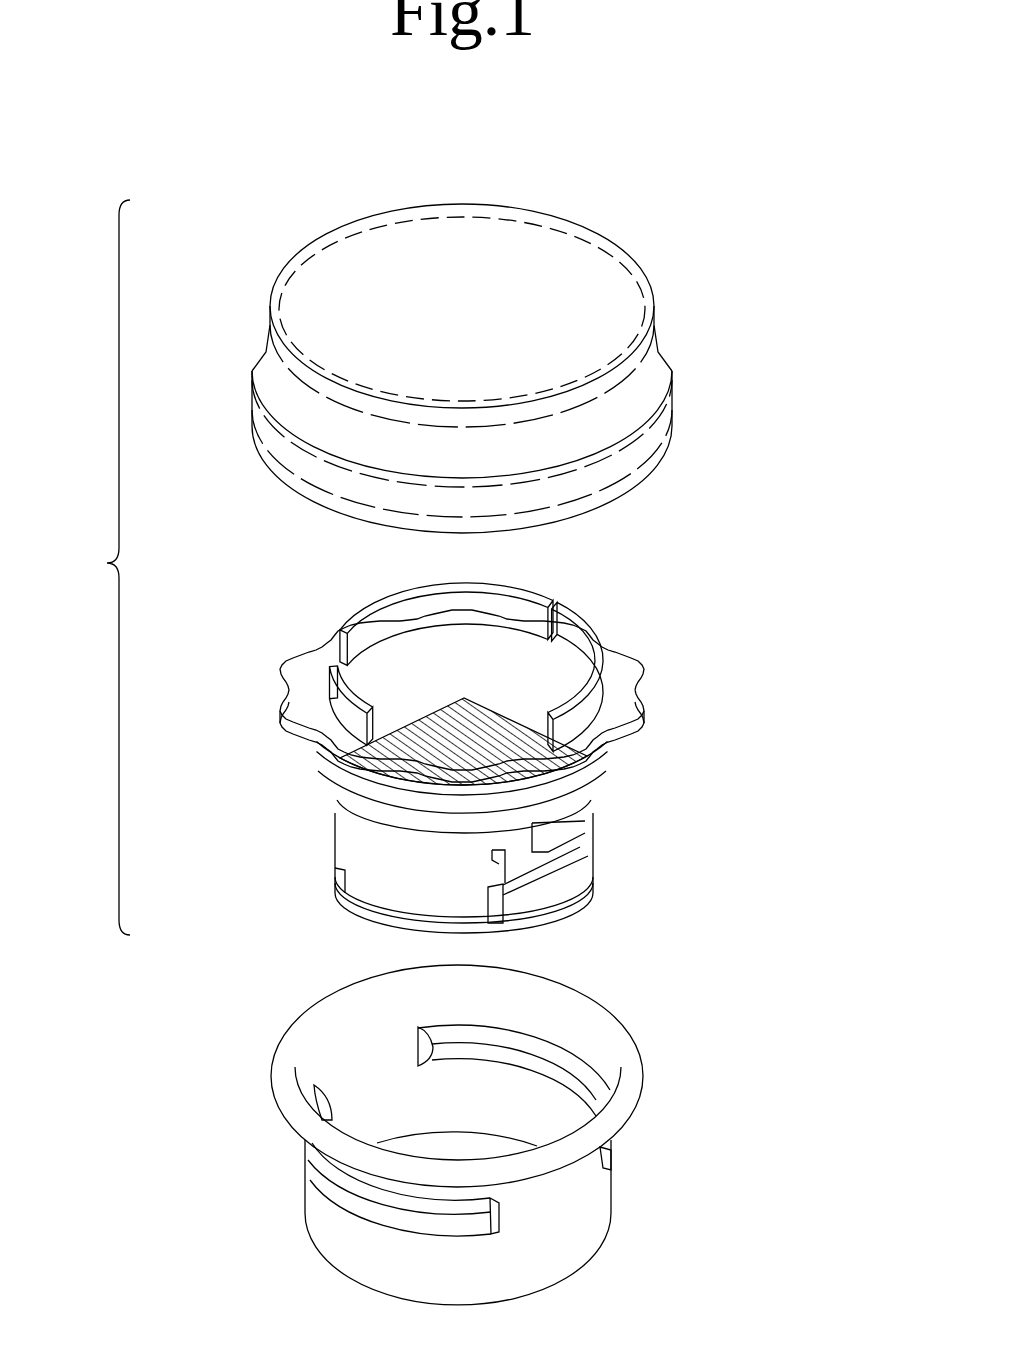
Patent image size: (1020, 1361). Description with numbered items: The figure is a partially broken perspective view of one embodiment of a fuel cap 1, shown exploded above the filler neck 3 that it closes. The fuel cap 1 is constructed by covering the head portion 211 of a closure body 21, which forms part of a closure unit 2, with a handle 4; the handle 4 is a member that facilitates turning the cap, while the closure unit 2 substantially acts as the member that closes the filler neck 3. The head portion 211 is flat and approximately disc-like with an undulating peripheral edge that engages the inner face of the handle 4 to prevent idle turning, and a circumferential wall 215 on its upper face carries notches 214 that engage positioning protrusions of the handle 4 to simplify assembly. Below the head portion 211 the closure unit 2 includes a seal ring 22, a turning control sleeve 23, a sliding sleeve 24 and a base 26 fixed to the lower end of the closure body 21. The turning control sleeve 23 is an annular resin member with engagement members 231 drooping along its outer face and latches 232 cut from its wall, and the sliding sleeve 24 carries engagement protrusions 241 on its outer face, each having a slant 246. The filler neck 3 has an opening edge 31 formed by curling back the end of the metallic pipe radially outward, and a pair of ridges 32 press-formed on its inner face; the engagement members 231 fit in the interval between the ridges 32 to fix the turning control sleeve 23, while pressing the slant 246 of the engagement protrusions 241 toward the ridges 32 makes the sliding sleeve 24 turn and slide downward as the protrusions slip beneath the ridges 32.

The fuel cap 1 is at (98, 567).
The closure unit 2 is at (263, 629).
The filler neck 3 is at (471, 1135).
The handle 4 is at (507, 316).
The closure body 21 is at (479, 651).
The seal ring 22 is at (285, 767).
The turning control sleeve 23 is at (611, 803).
The sliding sleeve 24 is at (478, 868).
The base 26 is at (322, 891).
The head portion 211 is at (606, 688).
The notches 214 is at (558, 622).
The circumferential wall 215 is at (500, 608).
The engagement member 231 is at (568, 848).
The latches 232 is at (548, 833).
The engagement protrusions 241 is at (580, 884).
The slant 246 is at (508, 888).
The opening edge 31 is at (287, 1058).
The ridges 32 is at (550, 1062).